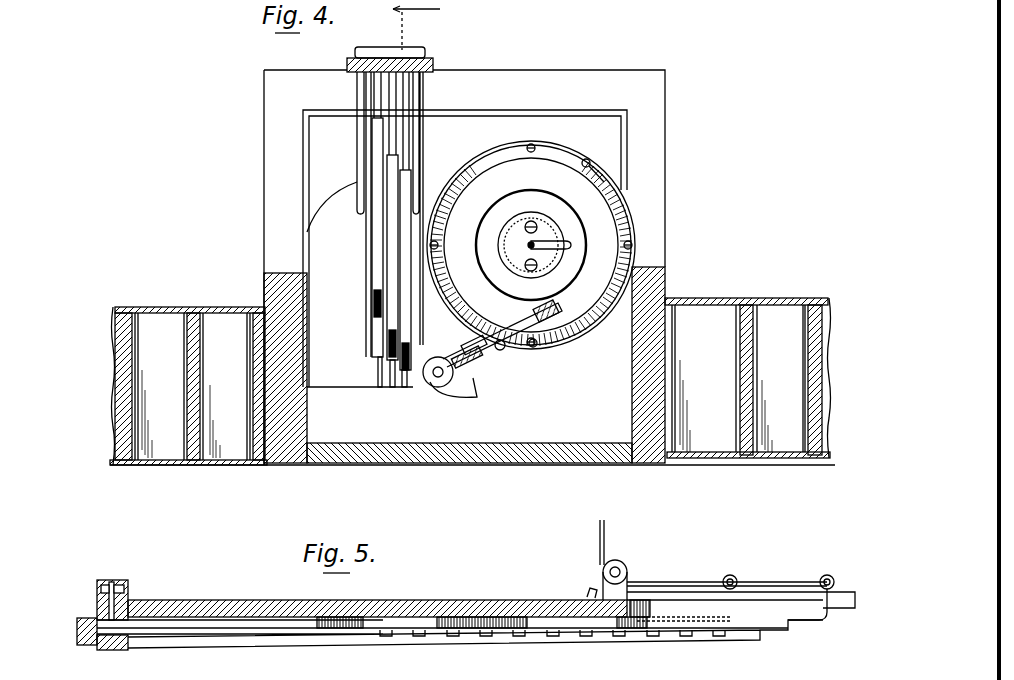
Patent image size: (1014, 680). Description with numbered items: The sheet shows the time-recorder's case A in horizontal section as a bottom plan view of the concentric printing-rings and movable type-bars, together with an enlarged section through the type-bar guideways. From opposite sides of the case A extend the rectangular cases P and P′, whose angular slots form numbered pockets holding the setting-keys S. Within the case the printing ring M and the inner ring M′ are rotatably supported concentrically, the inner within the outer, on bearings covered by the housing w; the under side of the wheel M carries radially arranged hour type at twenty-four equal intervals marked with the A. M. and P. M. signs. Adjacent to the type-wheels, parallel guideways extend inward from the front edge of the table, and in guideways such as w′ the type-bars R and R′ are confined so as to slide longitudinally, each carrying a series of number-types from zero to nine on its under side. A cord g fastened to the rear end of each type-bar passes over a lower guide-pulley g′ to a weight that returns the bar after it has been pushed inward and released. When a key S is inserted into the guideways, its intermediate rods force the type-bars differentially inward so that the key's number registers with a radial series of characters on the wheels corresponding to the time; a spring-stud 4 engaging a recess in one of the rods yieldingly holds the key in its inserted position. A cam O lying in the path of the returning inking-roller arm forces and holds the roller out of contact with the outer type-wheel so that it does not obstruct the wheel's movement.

In FIG. 4, the case A is at (472, 267).
In FIG. 5, the case A is at (113, 650).
In FIG. 4, the rectangular case P is at (168, 312).
In FIG. 4, the rectangular case P′ is at (748, 304).
In FIG. 4, the setting-key S is at (418, 56).
In FIG. 5, the setting-key S is at (88, 646).
In FIG. 4, the type-bar R is at (377, 133).
In FIG. 4, the type-bar R′ is at (390, 158).
In FIG. 4, the guideway w is at (366, 330).
In FIG. 4, the guideway w′ is at (378, 392).
In FIG. 4, the printing ring M is at (477, 193).
In FIG. 4, the printing ring M′ is at (557, 193).
In FIG. 4, the cam O is at (513, 342).
In FIG. 5, the spring-stud 4 is at (111, 580).
In FIG. 5, the cord g is at (767, 582).
In FIG. 5, the lower guide-pulley g′ is at (628, 566).